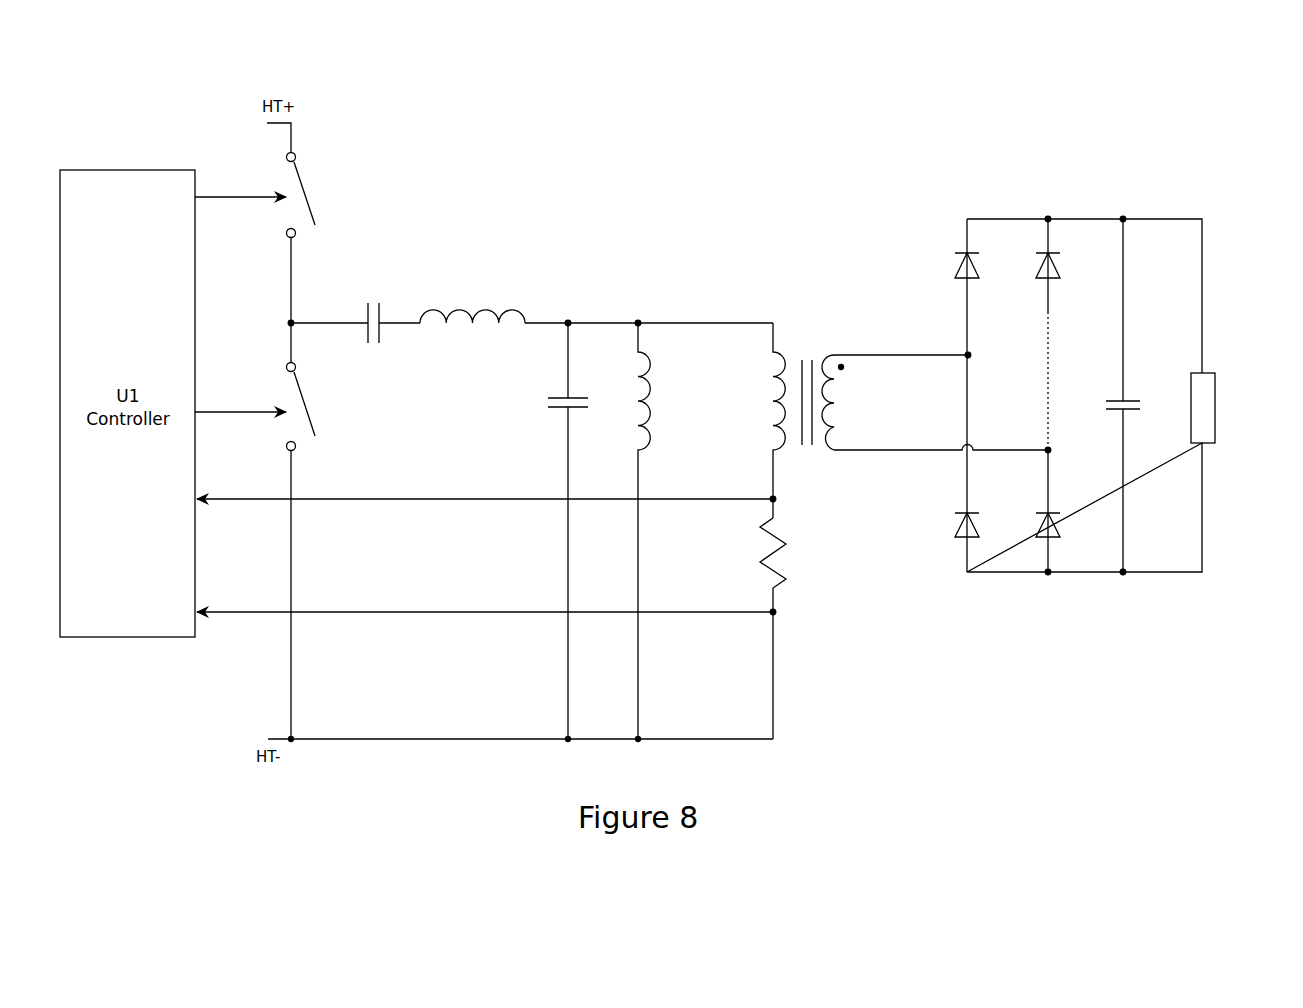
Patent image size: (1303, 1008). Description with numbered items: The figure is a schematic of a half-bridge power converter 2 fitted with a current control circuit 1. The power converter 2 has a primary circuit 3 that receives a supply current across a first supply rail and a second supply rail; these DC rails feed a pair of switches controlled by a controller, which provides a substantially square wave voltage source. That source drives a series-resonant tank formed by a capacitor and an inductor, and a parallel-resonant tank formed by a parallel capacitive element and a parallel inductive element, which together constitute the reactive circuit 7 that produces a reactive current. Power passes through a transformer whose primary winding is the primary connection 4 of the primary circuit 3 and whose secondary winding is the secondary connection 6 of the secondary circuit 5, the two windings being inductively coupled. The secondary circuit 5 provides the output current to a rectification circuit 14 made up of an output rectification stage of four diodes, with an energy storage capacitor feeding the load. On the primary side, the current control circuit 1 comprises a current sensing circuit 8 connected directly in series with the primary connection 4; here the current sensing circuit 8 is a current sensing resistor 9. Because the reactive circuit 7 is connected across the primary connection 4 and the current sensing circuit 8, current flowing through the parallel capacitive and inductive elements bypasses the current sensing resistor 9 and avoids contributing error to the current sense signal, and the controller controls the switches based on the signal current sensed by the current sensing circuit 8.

The current control circuit 1 is at (799, 599).
The power converter 2 is at (749, 158).
The primary circuit 3 is at (558, 240).
The primary connection 4 is at (752, 378).
The secondary circuit 5 is at (877, 300).
The secondary connection 6 is at (848, 433).
The reactive circuit 7 is at (612, 313).
The current sensing circuit 8 is at (802, 524).
The current sensing resistor 9 is at (815, 550).
The rectification circuit 14 is at (1067, 590).